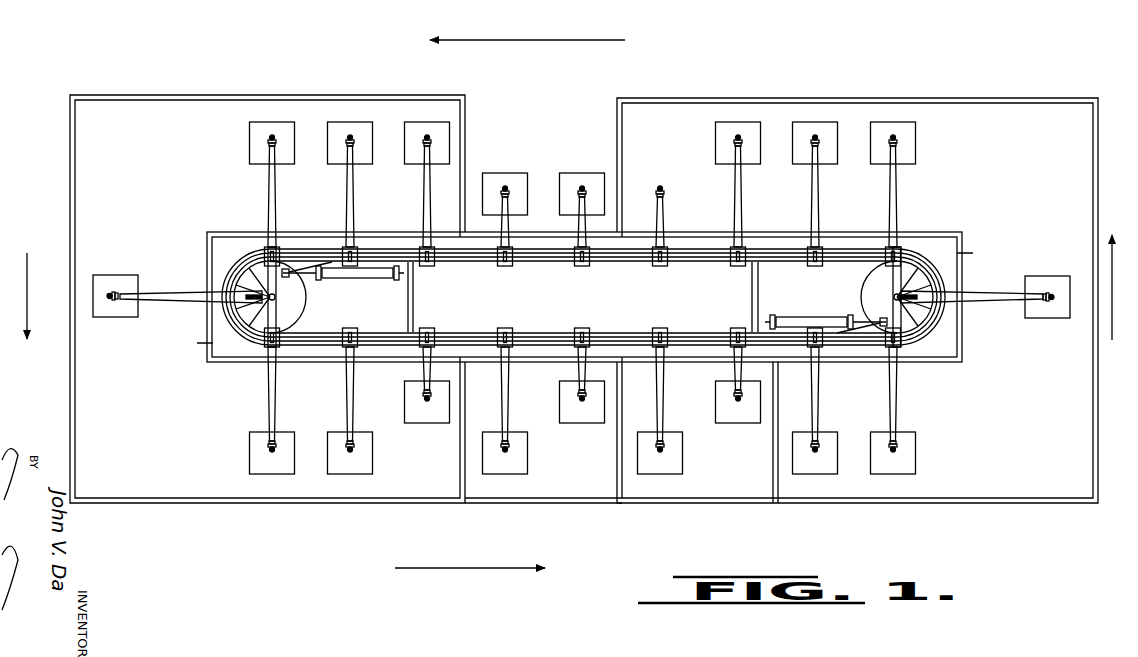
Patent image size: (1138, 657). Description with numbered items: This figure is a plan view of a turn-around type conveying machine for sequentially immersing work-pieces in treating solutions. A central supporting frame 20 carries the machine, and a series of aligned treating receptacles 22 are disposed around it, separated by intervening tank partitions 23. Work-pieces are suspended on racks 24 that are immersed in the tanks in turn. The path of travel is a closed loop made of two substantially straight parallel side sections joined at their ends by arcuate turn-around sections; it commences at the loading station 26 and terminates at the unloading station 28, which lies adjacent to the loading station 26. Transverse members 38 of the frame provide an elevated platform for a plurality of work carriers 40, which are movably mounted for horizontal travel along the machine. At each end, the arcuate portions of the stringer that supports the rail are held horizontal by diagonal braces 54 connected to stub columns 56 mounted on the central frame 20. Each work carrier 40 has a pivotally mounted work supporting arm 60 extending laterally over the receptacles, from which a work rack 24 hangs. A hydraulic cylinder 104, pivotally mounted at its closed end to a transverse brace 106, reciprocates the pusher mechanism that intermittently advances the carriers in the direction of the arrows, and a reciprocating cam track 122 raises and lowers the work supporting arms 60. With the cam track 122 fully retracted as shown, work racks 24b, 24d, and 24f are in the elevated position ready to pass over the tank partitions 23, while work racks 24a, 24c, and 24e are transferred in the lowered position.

The central supporting frame 20 is at (455, 266).
The treating receptacles 22 is at (167, 487).
The tank partitions 23 is at (460, 482).
The racks 24 is at (123, 276).
The work rack 24a is at (357, 468).
The work rack 24b is at (423, 422).
The work rack 24c is at (513, 468).
The work rack 24d is at (583, 423).
The work rack 24e is at (670, 467).
The work rack 24f is at (747, 418).
The loading station 26 is at (491, 168).
The unloading station 28 is at (569, 172).
The transverse members 38 is at (733, 287).
The work carriers 40 is at (902, 214).
The diagonal braces 54 is at (222, 317).
The stub columns 56 is at (276, 300).
The work supporting arms 60 is at (983, 297).
The hydraulic cylinder 104 is at (356, 279).
The transverse brace 106 is at (405, 307).
The reciprocating cam track 122 is at (675, 253).